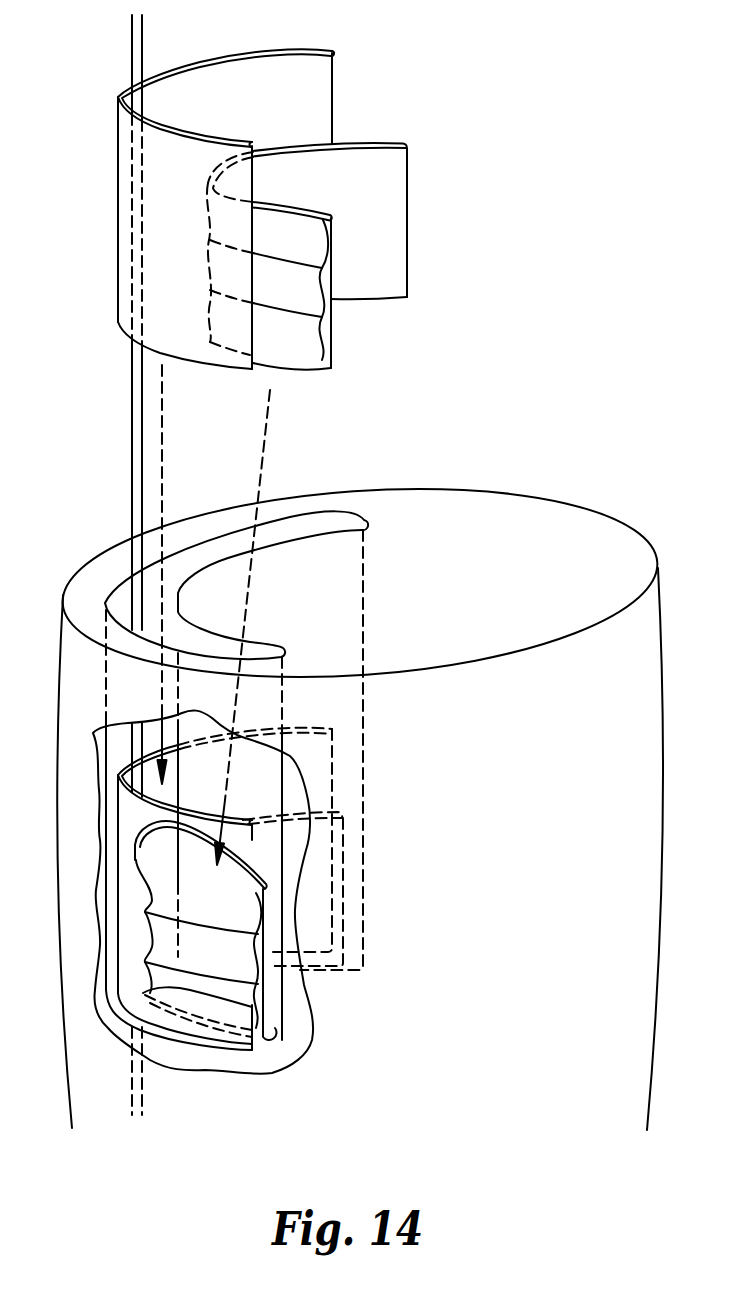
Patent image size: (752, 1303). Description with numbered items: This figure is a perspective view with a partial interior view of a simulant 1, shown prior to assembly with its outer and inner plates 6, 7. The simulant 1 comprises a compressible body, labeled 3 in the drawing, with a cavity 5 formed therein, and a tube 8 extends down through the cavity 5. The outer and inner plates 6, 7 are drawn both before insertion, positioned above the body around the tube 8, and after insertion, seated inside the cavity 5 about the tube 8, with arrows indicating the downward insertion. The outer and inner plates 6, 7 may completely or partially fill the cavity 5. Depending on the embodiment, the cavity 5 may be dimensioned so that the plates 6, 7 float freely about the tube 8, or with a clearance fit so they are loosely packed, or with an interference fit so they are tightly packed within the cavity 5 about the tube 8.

The simulant 1 is at (552, 468).
The tube wall 3 is at (479, 769).
The cavity 5 is at (123, 595).
The outer plate 6 is at (123, 182).
The inner plate 7 is at (393, 257).
The tube 8 is at (138, 44).